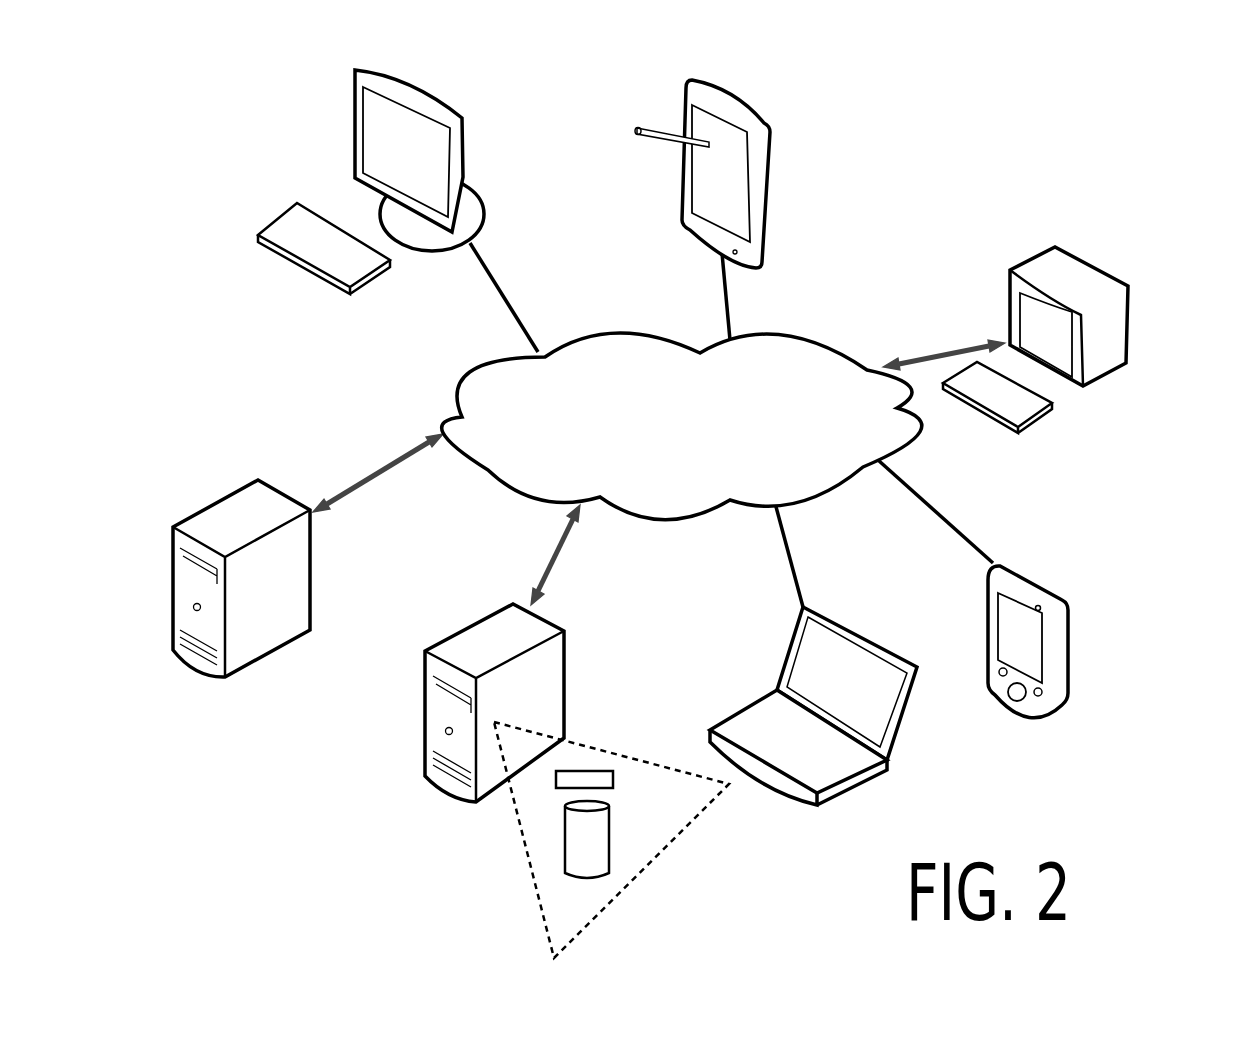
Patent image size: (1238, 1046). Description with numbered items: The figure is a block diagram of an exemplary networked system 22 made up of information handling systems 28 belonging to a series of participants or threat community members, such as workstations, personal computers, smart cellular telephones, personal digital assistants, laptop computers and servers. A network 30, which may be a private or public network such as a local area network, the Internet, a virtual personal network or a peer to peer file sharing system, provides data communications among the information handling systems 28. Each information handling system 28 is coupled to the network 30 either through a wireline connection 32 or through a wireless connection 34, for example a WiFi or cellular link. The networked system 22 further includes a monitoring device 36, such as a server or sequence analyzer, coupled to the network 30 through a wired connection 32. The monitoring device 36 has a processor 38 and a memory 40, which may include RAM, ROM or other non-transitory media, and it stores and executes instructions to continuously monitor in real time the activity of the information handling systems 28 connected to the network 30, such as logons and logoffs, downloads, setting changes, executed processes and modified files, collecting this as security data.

The networked system 22 is at (1000, 143).
The information handling system 28 is at (353, 80).
The network 30 is at (813, 337).
The wireline connection 32 is at (927, 357).
The wireless connection 34 is at (507, 307).
The monitoring device 36 is at (416, 788).
The processor 38 is at (558, 787).
The memory 40 is at (565, 867).